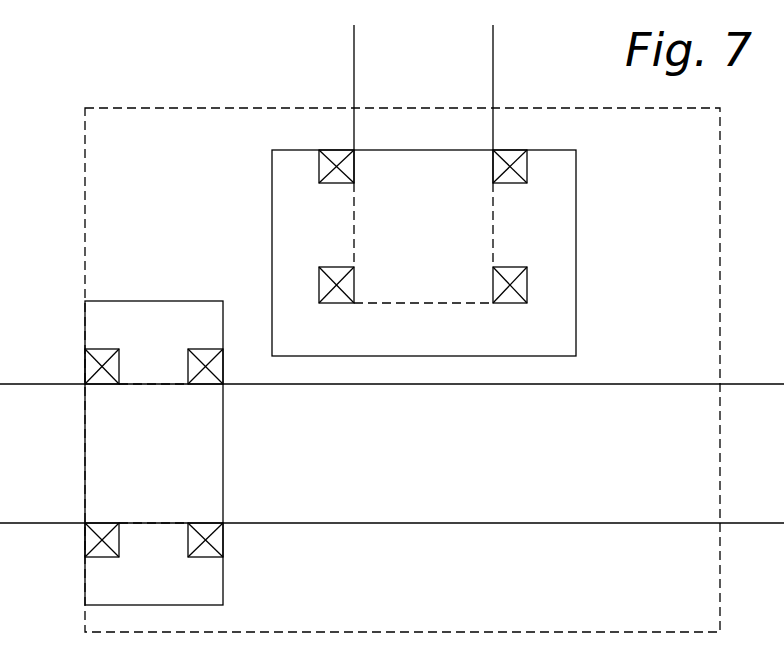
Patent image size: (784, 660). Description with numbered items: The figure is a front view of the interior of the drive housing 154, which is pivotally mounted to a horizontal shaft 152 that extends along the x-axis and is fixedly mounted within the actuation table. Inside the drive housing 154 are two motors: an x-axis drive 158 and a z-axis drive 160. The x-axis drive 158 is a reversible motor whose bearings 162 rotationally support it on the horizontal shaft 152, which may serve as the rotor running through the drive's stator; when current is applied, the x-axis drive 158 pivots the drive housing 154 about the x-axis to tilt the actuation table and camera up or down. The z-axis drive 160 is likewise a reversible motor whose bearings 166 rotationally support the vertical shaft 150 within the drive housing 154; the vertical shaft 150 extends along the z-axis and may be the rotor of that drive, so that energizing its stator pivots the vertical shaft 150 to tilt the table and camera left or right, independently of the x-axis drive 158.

The vertical shaft 150 is at (436, 83).
The horizontal shaft 152 is at (454, 461).
The drive housing 154 is at (668, 163).
The x-axis drive 158 is at (131, 318).
The z-axis drive 160 is at (291, 165).
The bearings 162 is at (93, 369).
The bearings 166 is at (343, 159).